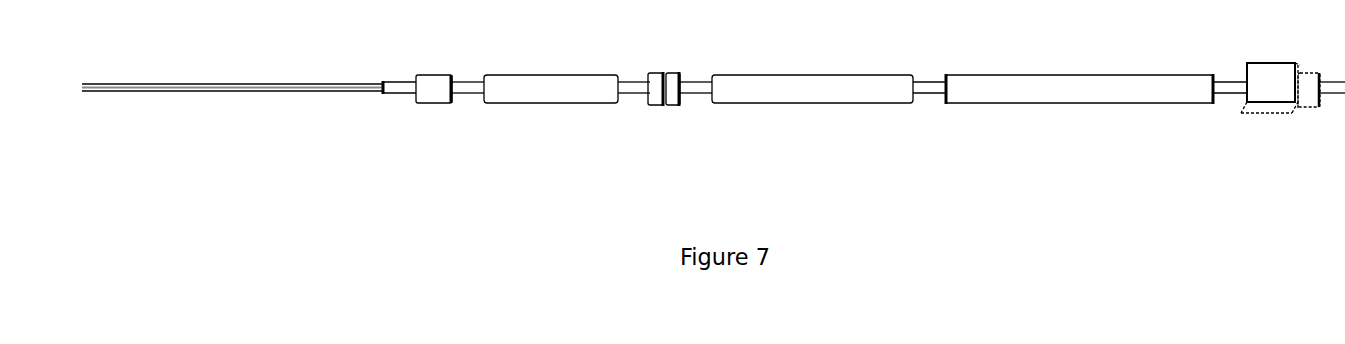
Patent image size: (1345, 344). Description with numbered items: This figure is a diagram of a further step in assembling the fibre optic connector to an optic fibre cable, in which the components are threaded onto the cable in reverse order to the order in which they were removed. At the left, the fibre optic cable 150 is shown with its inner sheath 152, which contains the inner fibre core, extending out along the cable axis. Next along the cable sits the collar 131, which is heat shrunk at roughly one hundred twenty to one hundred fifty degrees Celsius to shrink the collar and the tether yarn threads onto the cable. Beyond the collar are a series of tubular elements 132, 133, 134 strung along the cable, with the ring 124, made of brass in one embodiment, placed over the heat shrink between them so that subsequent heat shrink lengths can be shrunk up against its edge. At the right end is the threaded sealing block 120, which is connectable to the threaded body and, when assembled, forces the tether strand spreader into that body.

The inner sheath 152 is at (347, 88).
The fibre optic cable 150 is at (400, 93).
The collar 131 is at (432, 85).
The second housing segment 132 is at (573, 87).
The ring 124 is at (668, 85).
The third housing segment 133 is at (825, 90).
The fourth housing segment 134 is at (1082, 90).
The threaded sealing block 120 is at (1272, 87).